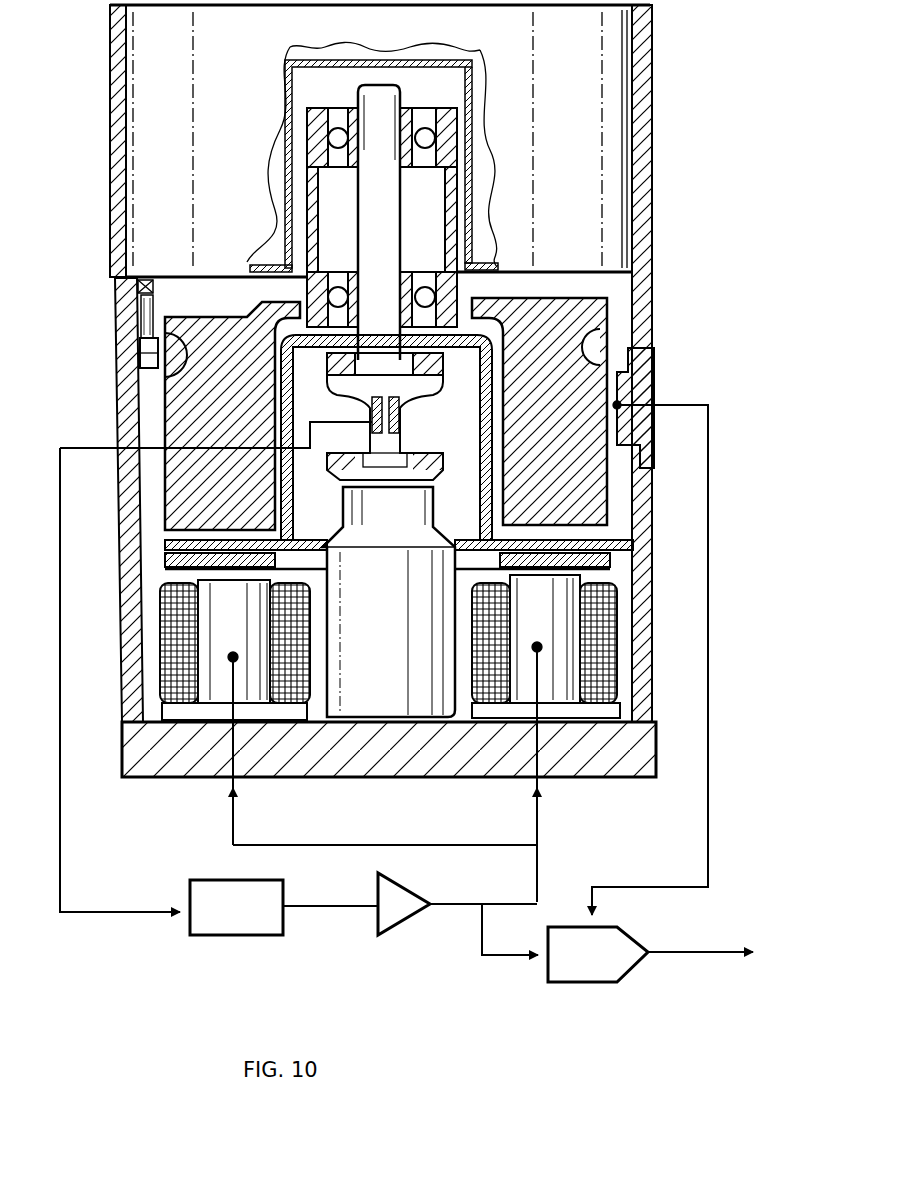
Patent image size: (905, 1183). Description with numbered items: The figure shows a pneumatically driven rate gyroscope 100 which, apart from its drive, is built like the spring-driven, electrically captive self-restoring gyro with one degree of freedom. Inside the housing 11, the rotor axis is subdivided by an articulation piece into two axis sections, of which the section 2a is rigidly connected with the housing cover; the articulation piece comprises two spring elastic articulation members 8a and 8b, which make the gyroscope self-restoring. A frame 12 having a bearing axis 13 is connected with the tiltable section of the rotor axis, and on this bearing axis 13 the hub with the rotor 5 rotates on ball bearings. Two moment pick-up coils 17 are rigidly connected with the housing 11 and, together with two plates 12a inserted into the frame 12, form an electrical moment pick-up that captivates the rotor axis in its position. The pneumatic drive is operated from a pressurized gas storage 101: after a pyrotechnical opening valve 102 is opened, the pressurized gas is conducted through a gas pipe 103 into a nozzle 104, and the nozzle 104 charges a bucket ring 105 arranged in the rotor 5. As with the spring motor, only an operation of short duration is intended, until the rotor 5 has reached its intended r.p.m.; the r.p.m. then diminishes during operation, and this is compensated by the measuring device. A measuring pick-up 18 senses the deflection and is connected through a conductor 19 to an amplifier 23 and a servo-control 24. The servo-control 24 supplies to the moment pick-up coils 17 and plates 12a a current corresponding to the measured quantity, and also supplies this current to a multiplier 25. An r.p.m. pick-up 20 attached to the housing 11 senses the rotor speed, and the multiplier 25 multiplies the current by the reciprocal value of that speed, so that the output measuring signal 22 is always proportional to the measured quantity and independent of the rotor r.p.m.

The housing 11 is at (640, 72).
The pressurized gas storage 101 is at (580, 135).
The pneumatically driven rate gyroscope 100 is at (666, 240).
The frame 12 is at (583, 307).
The plates 12a is at (175, 565).
The bearing axis 13 is at (385, 212).
The rotor 5 is at (200, 490).
The bucket ring 105 is at (592, 343).
The pyrotechnical opening valve 102 is at (138, 287).
The gas pipe 103 is at (142, 318).
The nozzle 104 is at (148, 368).
The axis section 2a is at (495, 332).
The spring elastic articulation member 8a is at (387, 392).
The spring elastic articulation member 8b is at (390, 397).
The measuring pick-up 18 is at (372, 420).
The moment pick-up coils 17 is at (217, 677).
The r.p.m. pick-up 20 is at (623, 390).
The conductor 19 is at (108, 915).
The measuring signal 22 is at (752, 960).
The amplifier 23 is at (243, 920).
The servo-control 24 is at (398, 910).
The multiplier 25 is at (585, 968).